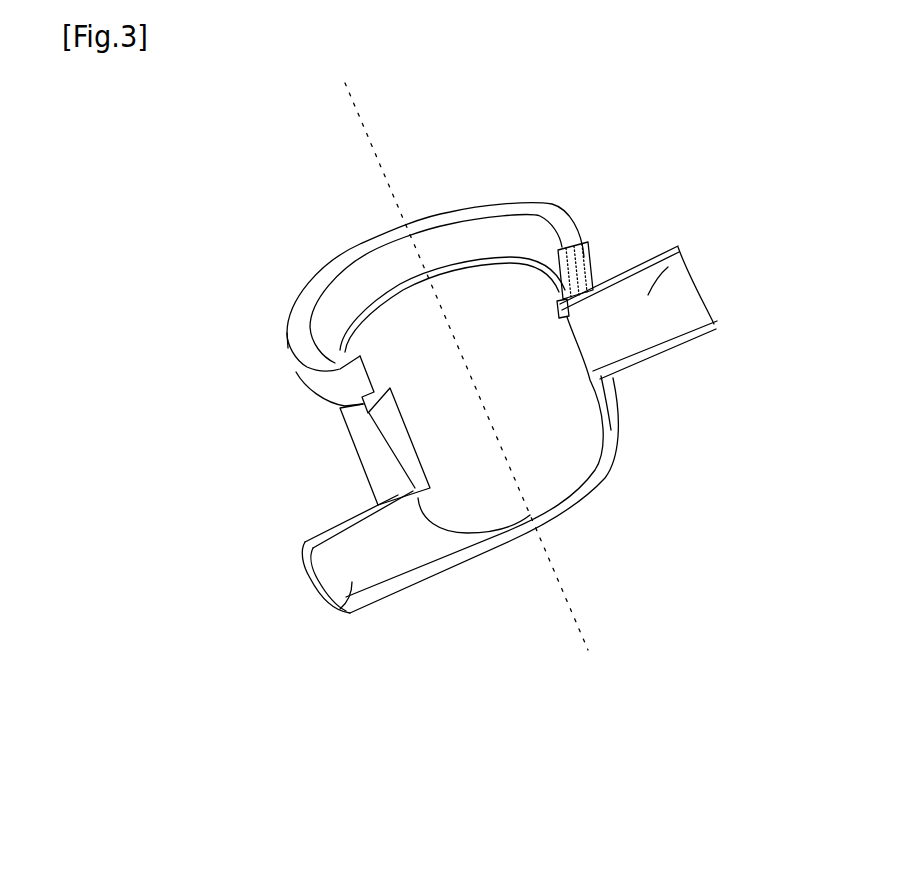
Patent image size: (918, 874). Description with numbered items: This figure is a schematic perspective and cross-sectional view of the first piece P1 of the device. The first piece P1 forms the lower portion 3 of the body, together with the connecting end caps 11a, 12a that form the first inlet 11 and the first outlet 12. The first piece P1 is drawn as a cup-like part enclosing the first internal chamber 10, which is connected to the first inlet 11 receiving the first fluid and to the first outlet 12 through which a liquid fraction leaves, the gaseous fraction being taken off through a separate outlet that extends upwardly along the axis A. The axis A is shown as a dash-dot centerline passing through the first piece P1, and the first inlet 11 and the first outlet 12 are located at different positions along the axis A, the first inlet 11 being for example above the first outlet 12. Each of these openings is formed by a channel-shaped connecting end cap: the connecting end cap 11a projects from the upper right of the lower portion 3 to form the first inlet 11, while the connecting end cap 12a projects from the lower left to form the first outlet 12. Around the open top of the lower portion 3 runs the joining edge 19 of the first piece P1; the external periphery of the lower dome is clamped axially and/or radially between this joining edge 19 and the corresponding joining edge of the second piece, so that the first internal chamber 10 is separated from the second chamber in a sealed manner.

The lower portion 3 is at (373, 340).
The first internal chamber 10 is at (570, 430).
The first inlet 11 is at (707, 323).
The connecting end cap 11a is at (678, 247).
The first outlet 12 is at (308, 576).
The connecting end cap 12a is at (345, 616).
The joining edge 19 is at (550, 204).
The axis A is at (373, 150).
The first piece P1 is at (270, 290).